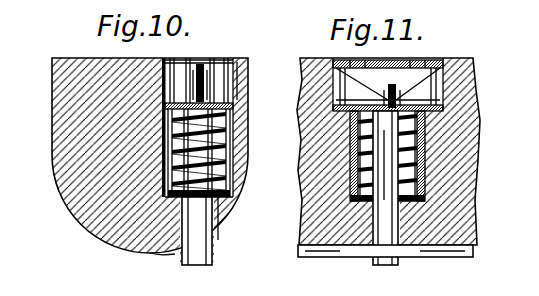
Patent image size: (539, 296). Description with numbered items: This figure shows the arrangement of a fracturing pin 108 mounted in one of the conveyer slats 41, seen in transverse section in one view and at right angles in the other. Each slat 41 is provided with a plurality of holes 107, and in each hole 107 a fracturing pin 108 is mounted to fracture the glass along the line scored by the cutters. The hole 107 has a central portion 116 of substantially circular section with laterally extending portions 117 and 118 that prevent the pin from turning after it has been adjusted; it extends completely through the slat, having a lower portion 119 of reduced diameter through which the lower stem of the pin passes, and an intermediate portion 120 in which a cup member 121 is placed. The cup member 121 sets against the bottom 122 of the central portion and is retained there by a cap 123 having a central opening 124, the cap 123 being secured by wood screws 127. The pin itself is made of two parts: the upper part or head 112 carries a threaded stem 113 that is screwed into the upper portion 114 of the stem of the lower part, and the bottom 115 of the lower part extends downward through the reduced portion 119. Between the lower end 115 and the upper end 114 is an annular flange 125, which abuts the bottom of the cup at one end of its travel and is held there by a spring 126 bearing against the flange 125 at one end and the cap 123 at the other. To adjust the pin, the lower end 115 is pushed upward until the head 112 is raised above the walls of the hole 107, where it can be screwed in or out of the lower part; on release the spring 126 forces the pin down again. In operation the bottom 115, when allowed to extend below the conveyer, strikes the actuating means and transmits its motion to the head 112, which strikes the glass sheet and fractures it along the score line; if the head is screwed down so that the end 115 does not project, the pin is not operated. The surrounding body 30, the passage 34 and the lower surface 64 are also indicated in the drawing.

In FIG. 10, the body block 30 is at (47, 99).
In FIG. 11, the body block 30 is at (486, 181).
In FIG. 10, the slat 41 is at (70, 57).
In FIG. 11, the slat 41 is at (440, 165).
In FIG. 10, the stem passage 34 is at (220, 253).
In FIG. 11, the stem passage 34 is at (435, 212).
In FIG. 10, the lower surface 64 is at (78, 222).
In FIG. 11, the lower surface 64 is at (300, 252).
In FIG. 10, the hole 107 is at (236, 180).
In FIG. 11, the hole 107 is at (458, 150).
In FIG. 10, the fracturing pin 108 is at (248, 72).
In FIG. 11, the fracturing pin 108 is at (418, 65).
In FIG. 10, the upper part 112 is at (206, 80).
In FIG. 11, the upper part 112 is at (392, 84).
In FIG. 10, the threaded stem 113 is at (241, 92).
In FIG. 11, the threaded stem 113 is at (333, 95).
In FIG. 10, the upper portion of the stem of the lower part 114 is at (244, 121).
In FIG. 11, the upper portion of the stem of the lower part 114 is at (350, 130).
In FIG. 10, the bottom of the fracturing pin 115 is at (210, 260).
In FIG. 11, the bottom of the fracturing pin 115 is at (388, 268).
In FIG. 10, the central portion 116 is at (176, 57).
In FIG. 11, the central portion 116 is at (474, 70).
In FIG. 11, the laterally extending portion 117 is at (336, 57).
In FIG. 10, the laterally extending portion 118 is at (237, 70).
In FIG. 11, the laterally extending portion 118 is at (455, 72).
In FIG. 10, the lower portion 119 is at (222, 228).
In FIG. 11, the lower portion 119 is at (357, 245).
In FIG. 10, the intermediate portion 120 is at (238, 162).
In FIG. 11, the intermediate portion 120 is at (432, 133).
In FIG. 10, the cup member 121 is at (238, 194).
In FIG. 11, the cup member 121 is at (468, 115).
In FIG. 10, the bottom of the central portion 122 is at (162, 258).
In FIG. 11, the bottom of the central portion 122 is at (328, 257).
In FIG. 10, the cap 123 is at (164, 106).
In FIG. 11, the cap 123 is at (470, 86).
In FIG. 10, the central opening 124 is at (167, 128).
In FIG. 11, the central opening 124 is at (460, 100).
In FIG. 10, the annular flange 125 is at (234, 210).
In FIG. 11, the annular flange 125 is at (426, 197).
In FIG. 10, the spring 126 is at (166, 172).
In FIG. 11, the spring 126 is at (418, 182).
In FIG. 11, the wood screw 127 is at (527, 91).